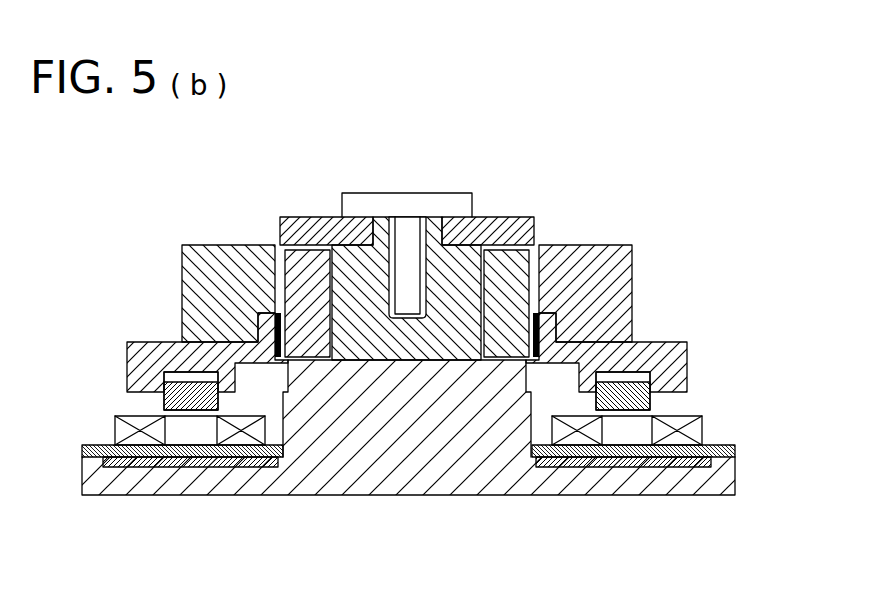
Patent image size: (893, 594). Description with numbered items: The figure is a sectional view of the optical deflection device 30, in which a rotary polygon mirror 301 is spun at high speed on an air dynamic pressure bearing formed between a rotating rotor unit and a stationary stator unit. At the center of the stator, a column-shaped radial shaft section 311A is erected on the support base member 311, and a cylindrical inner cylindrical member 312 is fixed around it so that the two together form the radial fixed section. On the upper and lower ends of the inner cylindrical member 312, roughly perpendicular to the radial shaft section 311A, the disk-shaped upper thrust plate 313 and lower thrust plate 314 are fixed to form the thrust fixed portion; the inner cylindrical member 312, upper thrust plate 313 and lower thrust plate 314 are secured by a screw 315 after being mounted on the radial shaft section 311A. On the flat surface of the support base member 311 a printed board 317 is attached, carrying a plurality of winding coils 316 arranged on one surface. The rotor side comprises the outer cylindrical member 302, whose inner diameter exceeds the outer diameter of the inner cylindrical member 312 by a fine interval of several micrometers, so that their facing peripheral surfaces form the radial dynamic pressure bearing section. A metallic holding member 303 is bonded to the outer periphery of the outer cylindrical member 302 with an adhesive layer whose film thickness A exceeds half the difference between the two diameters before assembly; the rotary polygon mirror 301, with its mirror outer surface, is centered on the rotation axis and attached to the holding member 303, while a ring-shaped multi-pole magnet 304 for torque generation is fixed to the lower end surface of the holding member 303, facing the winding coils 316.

The optical deflection device 30 is at (651, 246).
The rotary polygon mirror 301 is at (183, 315).
The outer cylindrical member 302 is at (295, 262).
The holding member 303 is at (128, 370).
The magnet 304 is at (165, 400).
The support base member 311 is at (666, 483).
The radial shaft section 311A is at (429, 228).
The inner cylindrical member 312 is at (427, 252).
The upper thrust plate 313 is at (534, 230).
The lower thrust plate 314 is at (455, 385).
The screw 315 is at (366, 196).
The winding coil 316 is at (703, 422).
The printed board 317 is at (735, 450).
The film thickness of the adhesive agent layer A is at (532, 330).